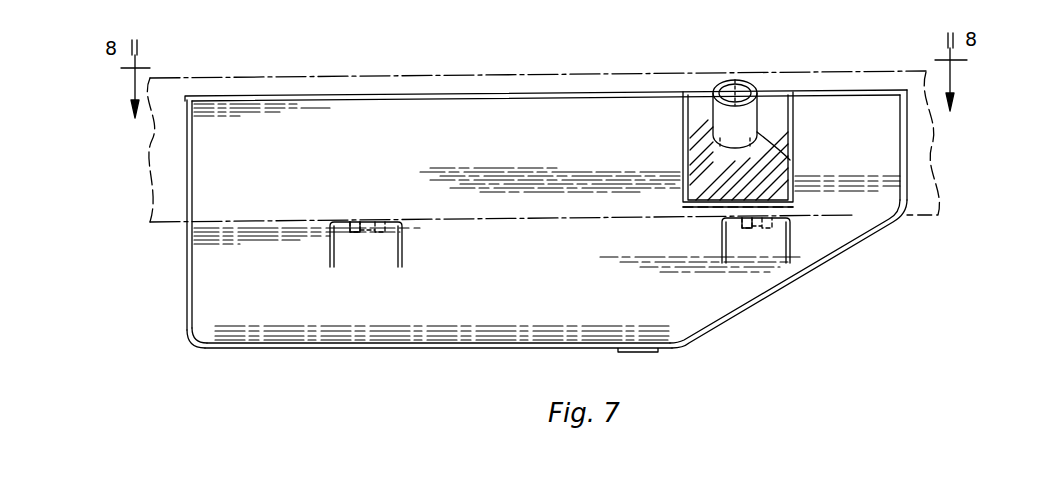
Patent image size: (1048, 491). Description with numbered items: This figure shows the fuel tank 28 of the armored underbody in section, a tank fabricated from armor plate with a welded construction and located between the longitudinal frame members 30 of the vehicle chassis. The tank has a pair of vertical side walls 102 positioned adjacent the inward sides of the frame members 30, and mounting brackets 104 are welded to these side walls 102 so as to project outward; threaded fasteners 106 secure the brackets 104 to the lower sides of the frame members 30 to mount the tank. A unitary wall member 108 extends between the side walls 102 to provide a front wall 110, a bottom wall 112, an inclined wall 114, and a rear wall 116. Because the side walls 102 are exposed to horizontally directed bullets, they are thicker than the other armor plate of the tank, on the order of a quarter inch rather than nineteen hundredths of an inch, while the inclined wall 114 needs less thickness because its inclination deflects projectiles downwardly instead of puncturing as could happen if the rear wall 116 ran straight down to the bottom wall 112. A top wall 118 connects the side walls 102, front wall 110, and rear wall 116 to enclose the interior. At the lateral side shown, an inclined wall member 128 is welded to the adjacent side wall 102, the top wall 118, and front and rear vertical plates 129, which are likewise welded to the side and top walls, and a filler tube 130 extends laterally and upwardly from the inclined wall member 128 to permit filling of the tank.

The fuel tank 28 is at (840, 264).
The longitudinal frame members 30 is at (480, 77).
The vertical side walls 102 is at (572, 209).
The mounting brackets 104 is at (402, 238).
The threaded fasteners 106 is at (373, 232).
The unitary wall member 108 is at (272, 350).
The front wall 110 is at (187, 288).
The bottom wall 112 is at (425, 350).
The inclined wall 114 is at (795, 290).
The rear wall 116 is at (907, 137).
The top wall 118 is at (347, 95).
The inclined wall member 128 is at (770, 110).
The front and rear vertical plates 129 is at (770, 150).
The filler tube 130 is at (730, 80).